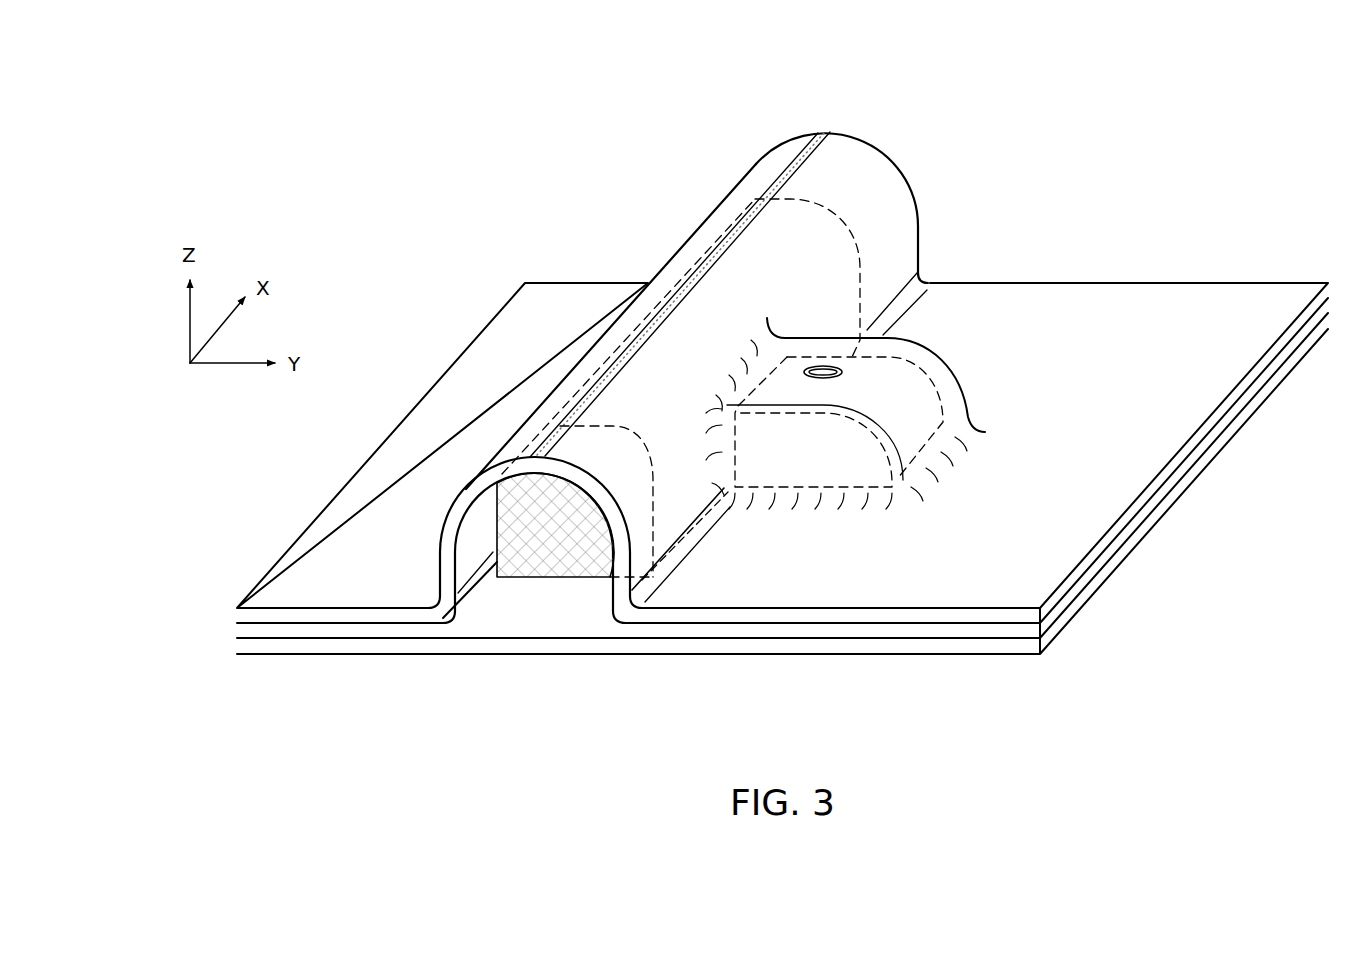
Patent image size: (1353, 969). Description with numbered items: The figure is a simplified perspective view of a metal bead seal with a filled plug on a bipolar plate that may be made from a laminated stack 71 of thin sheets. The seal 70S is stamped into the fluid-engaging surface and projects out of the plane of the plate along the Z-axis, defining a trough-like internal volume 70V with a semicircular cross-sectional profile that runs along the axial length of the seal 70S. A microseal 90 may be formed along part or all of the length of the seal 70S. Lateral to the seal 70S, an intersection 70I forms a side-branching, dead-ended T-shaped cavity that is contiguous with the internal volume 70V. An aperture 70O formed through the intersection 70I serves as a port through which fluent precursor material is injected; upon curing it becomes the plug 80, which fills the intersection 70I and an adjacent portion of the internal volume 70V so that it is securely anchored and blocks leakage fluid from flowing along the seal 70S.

The laminated stack 71 is at (222, 609).
The seal 70S is at (777, 155).
The microseal 90 is at (817, 138).
The plug 80 is at (720, 233).
The aperture 70O is at (823, 365).
The intersection 70I is at (945, 380).
The internal volume 70V is at (500, 600).